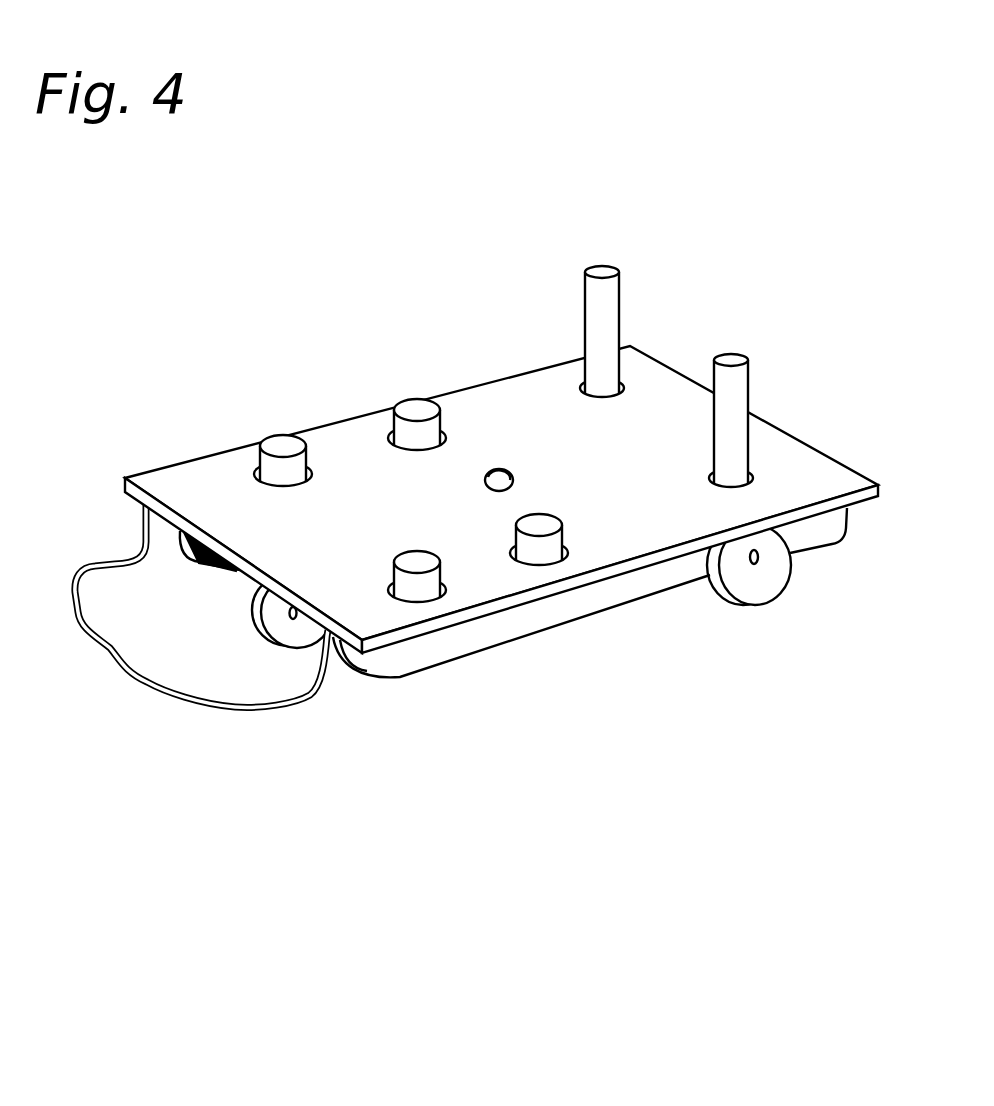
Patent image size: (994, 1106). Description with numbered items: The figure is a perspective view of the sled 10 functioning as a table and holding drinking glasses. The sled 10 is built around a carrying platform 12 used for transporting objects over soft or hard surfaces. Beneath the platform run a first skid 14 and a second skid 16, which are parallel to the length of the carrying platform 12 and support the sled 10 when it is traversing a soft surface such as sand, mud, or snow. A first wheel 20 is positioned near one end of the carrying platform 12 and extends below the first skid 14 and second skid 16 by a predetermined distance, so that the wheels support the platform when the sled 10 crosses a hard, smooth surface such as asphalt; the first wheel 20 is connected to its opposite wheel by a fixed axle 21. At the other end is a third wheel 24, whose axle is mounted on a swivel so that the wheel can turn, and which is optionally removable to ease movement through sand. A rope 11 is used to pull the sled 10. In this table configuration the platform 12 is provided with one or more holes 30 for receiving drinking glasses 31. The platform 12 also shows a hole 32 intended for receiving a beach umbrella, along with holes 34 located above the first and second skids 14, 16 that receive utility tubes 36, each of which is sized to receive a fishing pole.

The sled 10 is at (495, 583).
The rope 11 is at (207, 700).
The carrying platform 12 is at (563, 489).
The first skid 14 is at (682, 580).
The second skid 16 is at (193, 556).
The first wheel 20 is at (758, 583).
The fixed axle 21 is at (760, 558).
The third wheel 24 is at (283, 630).
The holes 30 is at (390, 590).
The drinking glasses 31 is at (283, 434).
The hole 32 is at (497, 470).
The holes 34 is at (712, 472).
The utility tubes 36 is at (600, 305).